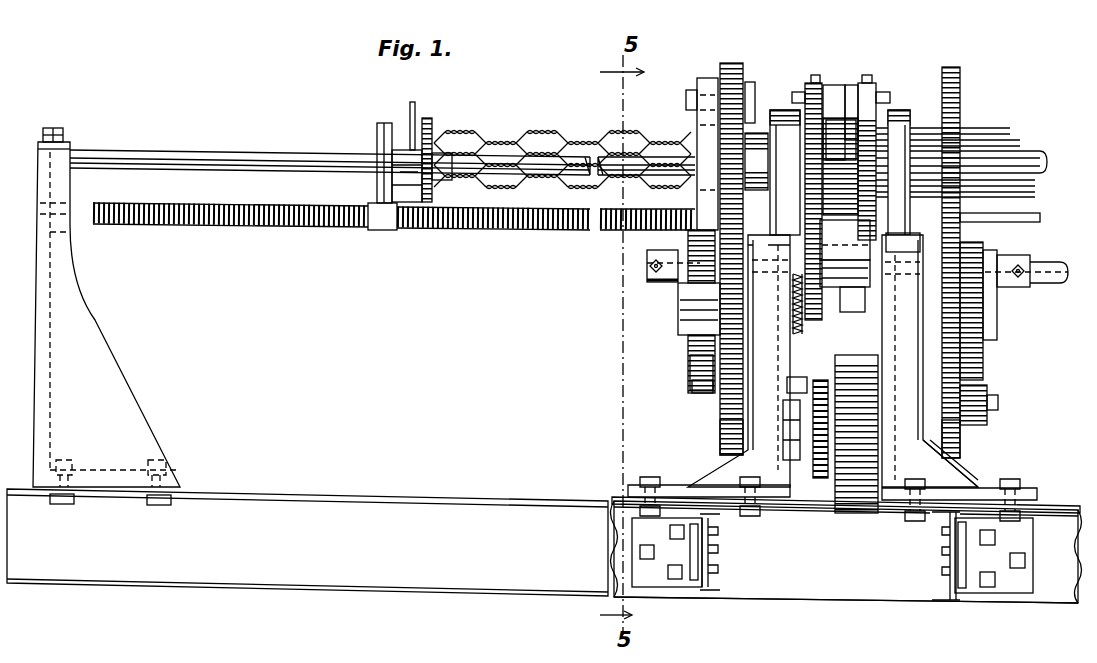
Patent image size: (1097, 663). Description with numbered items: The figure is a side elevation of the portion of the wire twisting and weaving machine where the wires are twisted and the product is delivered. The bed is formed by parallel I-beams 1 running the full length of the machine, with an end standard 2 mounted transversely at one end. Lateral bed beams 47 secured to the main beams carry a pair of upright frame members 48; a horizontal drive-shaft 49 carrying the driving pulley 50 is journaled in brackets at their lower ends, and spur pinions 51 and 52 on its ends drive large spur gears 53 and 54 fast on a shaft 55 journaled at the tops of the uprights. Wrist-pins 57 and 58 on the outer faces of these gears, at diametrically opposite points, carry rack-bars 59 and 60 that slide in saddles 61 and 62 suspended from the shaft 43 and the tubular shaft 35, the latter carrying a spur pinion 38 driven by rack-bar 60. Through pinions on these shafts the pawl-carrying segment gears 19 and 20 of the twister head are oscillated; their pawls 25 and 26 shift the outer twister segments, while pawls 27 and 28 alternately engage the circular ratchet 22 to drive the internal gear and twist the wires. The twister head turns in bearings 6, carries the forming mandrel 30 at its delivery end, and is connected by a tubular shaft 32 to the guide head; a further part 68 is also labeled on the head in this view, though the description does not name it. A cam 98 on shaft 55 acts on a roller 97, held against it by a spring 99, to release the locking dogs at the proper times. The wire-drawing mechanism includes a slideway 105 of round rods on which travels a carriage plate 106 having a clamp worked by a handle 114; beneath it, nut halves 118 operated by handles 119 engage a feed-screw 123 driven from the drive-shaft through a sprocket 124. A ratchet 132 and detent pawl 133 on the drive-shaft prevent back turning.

The bed beams 1 is at (381, 511).
The end standard 2 is at (82, 303).
The bearings 6 is at (787, 120).
The pawl-carrying segment gear 19 is at (807, 165).
The pawl-carrying segment gear 20 is at (870, 170).
The circular ratchet 22 is at (840, 118).
The pawl 25 is at (808, 90).
The pawl 26 is at (877, 96).
The pawl 27 is at (835, 125).
The pawl 28 is at (852, 95).
The forming head or mandrel 30 is at (760, 130).
The tubular shaft 32 is at (1031, 156).
The tubular shaft 35 is at (1029, 270).
The spur pinion 38 is at (981, 260).
The shaft 43 is at (1056, 270).
The bed beams 47 is at (709, 565).
The upright frame members 48 is at (697, 365).
The drive-shaft 49 is at (931, 446).
The driving pulley 50 is at (856, 434).
The spur pinion 51 is at (713, 440).
The spur pinion 52 is at (963, 455).
The spur gear 53 is at (697, 345).
The spur gear 54 is at (956, 372).
The shaft 55 is at (849, 290).
The wrist-pin 57 is at (686, 100).
The wrist-pin 58 is at (996, 405).
The rack-bar 59 is at (697, 388).
The rack-bar 60 is at (965, 353).
The saddle 61 is at (683, 308).
The saddle 62 is at (996, 325).
The pin 68 is at (892, 103).
The roller 97 is at (808, 326).
The cam 98 is at (848, 262).
The spring 99 is at (790, 312).
The slideway 105 is at (207, 158).
The carriage plate 106 is at (429, 130).
The handle 114 is at (412, 105).
The divided nut halves 118 is at (389, 238).
The handles 119 is at (378, 138).
The feed-screw 123 is at (490, 232).
The sprocket 124 is at (786, 385).
The ratchet 132 is at (793, 458).
The detent pawl 133 is at (718, 410).